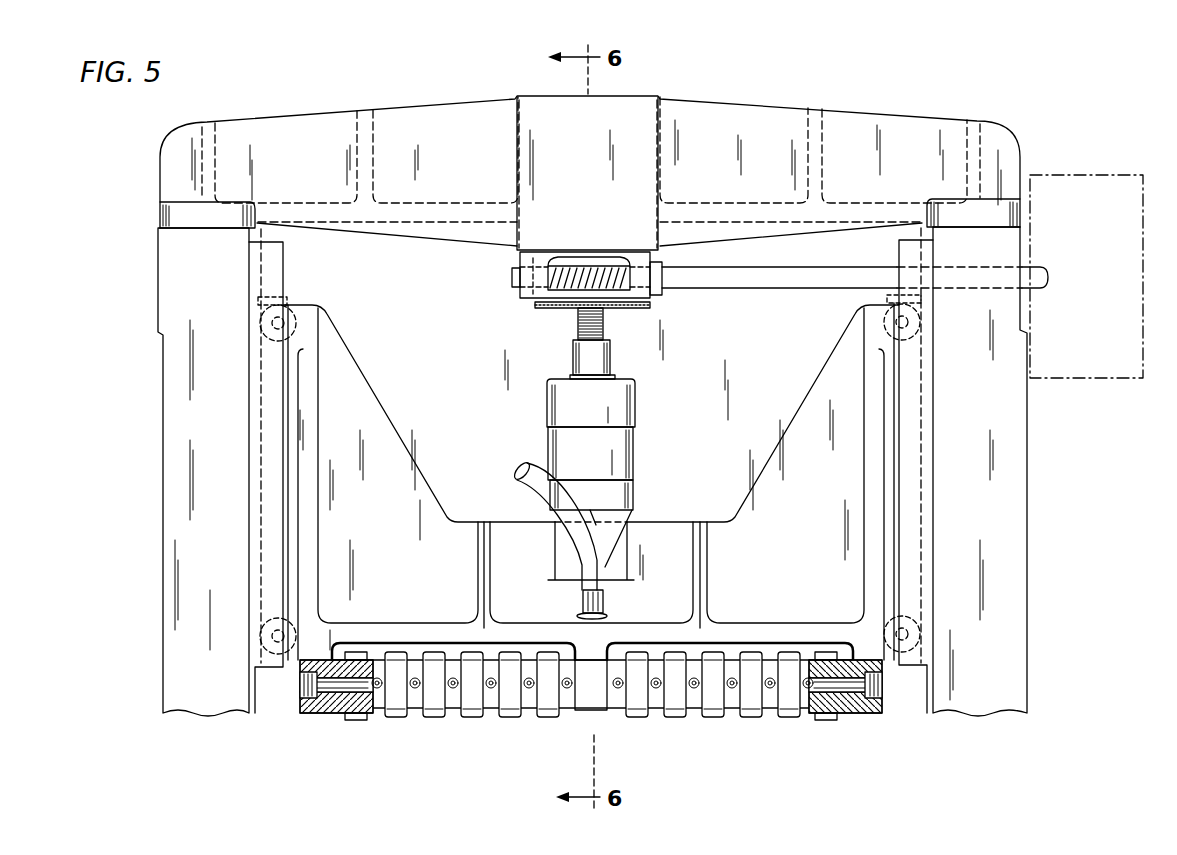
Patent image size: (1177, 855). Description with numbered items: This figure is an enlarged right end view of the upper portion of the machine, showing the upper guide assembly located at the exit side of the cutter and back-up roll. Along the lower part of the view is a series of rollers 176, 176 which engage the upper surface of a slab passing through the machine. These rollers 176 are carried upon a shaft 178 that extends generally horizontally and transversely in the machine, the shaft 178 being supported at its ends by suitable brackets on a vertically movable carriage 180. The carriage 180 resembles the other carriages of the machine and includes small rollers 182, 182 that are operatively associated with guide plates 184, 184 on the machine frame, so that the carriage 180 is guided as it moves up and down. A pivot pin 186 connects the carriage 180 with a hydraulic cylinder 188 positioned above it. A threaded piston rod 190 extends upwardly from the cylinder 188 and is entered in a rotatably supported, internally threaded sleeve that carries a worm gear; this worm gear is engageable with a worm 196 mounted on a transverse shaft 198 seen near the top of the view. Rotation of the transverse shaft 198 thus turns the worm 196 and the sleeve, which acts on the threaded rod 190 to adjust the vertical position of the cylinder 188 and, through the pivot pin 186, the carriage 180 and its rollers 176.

The rollers 176 is at (434, 719).
The shaft 178 is at (843, 716).
The carriage 180 is at (753, 493).
The small rollers 182 is at (264, 342).
The guide plates 184 is at (285, 497).
The pivot pin 186 is at (600, 546).
The hydraulic cylinder 188 is at (635, 437).
The threaded piston rod 190 is at (603, 328).
The worm 196 is at (587, 262).
The transverse shaft 198 is at (797, 288).